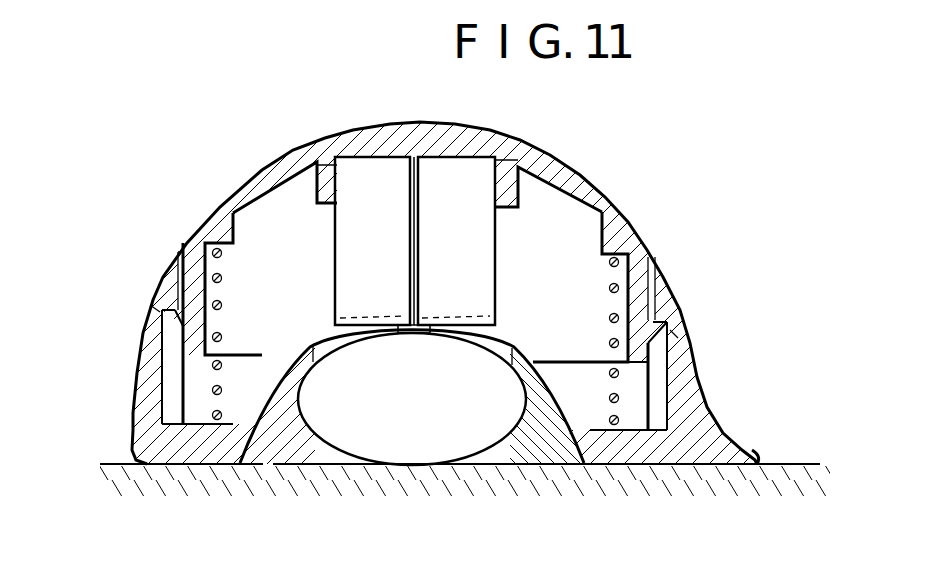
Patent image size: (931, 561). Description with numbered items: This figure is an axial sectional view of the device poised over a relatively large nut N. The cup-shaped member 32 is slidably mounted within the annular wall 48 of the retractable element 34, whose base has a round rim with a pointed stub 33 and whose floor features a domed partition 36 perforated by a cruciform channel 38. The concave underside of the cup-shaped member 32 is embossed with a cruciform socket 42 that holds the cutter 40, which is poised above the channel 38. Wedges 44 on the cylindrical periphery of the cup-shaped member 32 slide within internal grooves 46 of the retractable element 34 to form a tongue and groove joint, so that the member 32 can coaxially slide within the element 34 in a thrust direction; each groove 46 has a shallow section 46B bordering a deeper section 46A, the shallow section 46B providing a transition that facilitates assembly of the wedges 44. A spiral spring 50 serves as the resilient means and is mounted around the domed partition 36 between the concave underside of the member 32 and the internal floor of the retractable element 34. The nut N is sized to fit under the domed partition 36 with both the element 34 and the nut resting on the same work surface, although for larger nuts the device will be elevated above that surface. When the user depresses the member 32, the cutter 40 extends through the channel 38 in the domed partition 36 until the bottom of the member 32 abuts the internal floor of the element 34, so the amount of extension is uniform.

The cup-shaped member 32 is at (572, 170).
The pointed stub 33 is at (760, 452).
The retractable element 34 is at (720, 382).
The domed partition 36 is at (575, 430).
The cruciform channel 38 is at (333, 346).
The cutter 40 is at (378, 180).
The cruciform socket 42 is at (522, 188).
The wedges 44 is at (162, 327).
The internal grooves 46 is at (170, 410).
The deeper section 46A is at (140, 437).
The shallow section 46B is at (180, 278).
The annular wall 48 is at (153, 310).
The spiral spring 50 is at (220, 280).
The nut N is at (368, 445).